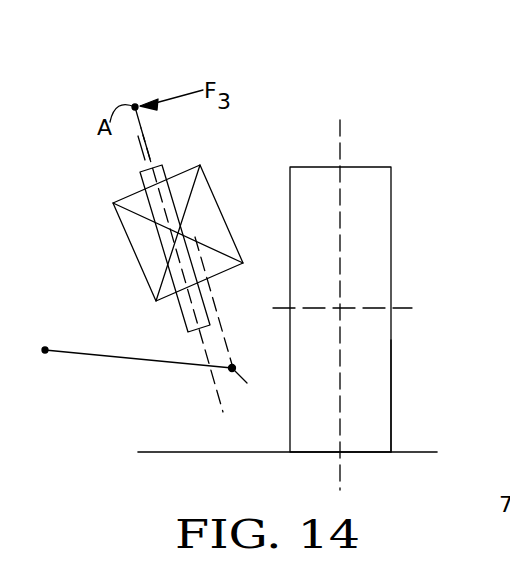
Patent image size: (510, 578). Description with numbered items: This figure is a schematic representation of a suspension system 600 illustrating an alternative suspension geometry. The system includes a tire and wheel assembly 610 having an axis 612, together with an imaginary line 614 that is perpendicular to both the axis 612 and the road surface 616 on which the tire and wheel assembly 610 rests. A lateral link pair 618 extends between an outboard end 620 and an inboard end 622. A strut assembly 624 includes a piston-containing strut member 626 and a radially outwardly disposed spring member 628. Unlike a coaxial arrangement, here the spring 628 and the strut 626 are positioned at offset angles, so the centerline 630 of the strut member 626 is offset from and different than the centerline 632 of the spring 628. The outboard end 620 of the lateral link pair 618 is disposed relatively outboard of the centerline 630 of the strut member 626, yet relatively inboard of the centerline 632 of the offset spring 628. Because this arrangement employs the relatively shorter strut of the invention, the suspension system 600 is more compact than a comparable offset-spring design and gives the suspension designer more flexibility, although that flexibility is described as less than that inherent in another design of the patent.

The suspension system 600 is at (250, 95).
The tire and wheel assembly 610 is at (369, 160).
The axis 612 is at (400, 308).
The imaginary line 614 is at (345, 142).
The road surface 616 is at (427, 450).
The lateral link pair 618 is at (72, 352).
The outboard end 620 is at (232, 372).
The inboard end 622 is at (45, 352).
The strut assembly 624 is at (72, 118).
The strut member 626 is at (140, 182).
The spring member 628 is at (130, 238).
The centerline 630 is at (130, 98).
The centerline 632 is at (140, 152).